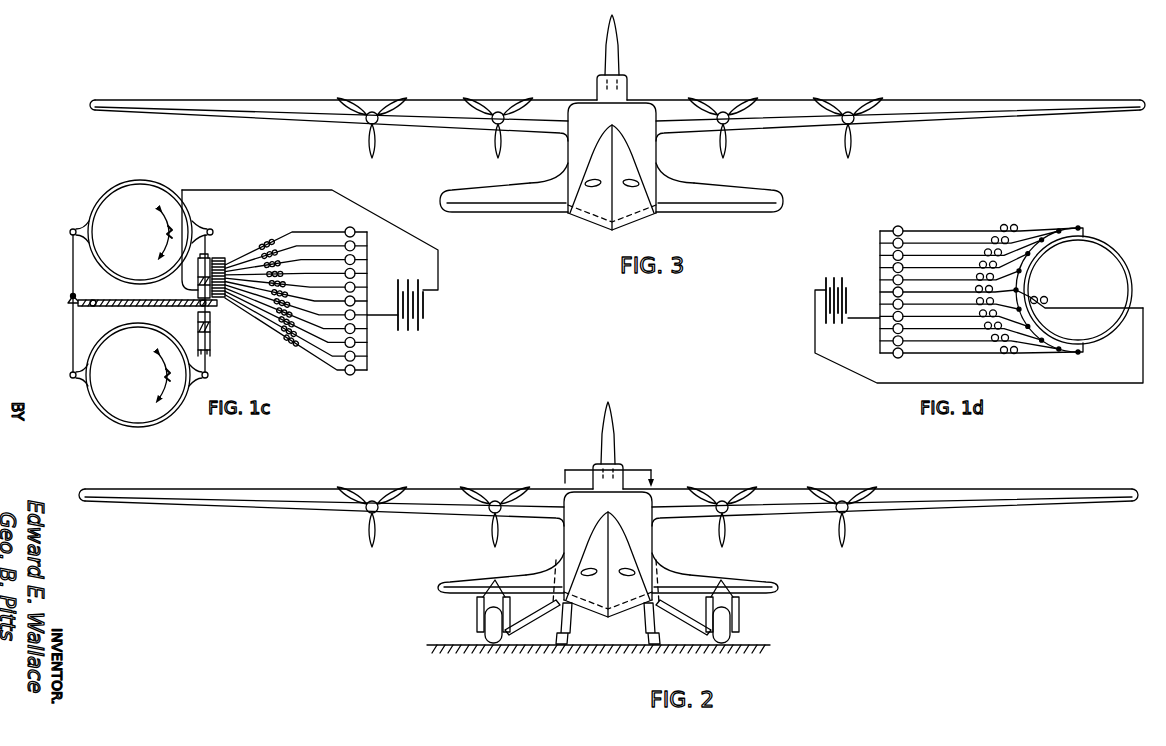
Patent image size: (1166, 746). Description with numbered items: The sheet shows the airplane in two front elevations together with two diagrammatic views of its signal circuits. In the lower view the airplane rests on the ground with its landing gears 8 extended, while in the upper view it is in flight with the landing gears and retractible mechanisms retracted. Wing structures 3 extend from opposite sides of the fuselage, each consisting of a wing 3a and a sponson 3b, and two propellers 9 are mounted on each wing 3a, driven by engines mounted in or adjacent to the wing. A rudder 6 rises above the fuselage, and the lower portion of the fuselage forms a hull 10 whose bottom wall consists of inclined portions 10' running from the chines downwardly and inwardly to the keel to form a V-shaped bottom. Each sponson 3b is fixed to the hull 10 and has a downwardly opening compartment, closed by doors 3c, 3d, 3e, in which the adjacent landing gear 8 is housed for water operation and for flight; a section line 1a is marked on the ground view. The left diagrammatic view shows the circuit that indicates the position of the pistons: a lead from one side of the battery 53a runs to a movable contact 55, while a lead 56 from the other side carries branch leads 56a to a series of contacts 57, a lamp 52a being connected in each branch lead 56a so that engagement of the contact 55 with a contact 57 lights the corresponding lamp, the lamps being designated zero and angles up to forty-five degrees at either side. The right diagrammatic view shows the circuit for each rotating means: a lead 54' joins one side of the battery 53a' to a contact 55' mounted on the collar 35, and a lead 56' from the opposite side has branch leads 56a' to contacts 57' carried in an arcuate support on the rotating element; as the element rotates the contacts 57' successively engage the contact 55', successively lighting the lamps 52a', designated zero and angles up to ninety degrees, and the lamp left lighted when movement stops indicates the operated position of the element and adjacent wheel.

In FIG. 2, the section line 1a is at (608, 472).
In FIG. 2, the wing structure 3 is at (608, 527).
In FIG. 3, the wing 3a is at (304, 123).
In FIG. 2, the wing 3a is at (467, 516).
In FIG. 3, the sponson 3b is at (494, 204).
In FIG. 2, the sponson 3b is at (740, 579).
In FIG. 2, the door 3c is at (654, 628).
In FIG. 2, the door 3d is at (736, 633).
In FIG. 2, the door 3e is at (478, 620).
In FIG. 3, the rudder 6 is at (621, 42).
In FIG. 2, the rudder 6 is at (608, 445).
In FIG. 2, the landing gear 8 is at (741, 616).
In FIG. 3, the propeller 9 is at (517, 107).
In FIG. 2, the propeller 9 is at (478, 495).
In FIG. 3, the hull 10 is at (612, 177).
In FIG. 2, the hull 10 is at (608, 566).
In FIG. 3, the inclined bottom portions 10' is at (612, 223).
In FIG. 2, the inclined bottom portions 10' is at (608, 616).
In FIG. 1C, the collar 35 is at (109, 189).
In FIG. 1D, the collar 35 is at (1080, 288).
In FIG. 1C, the signal devices 52a is at (337, 309).
In FIG. 1C, the battery 53a is at (325, 263).
In FIG. 1C, the movable contact 55 is at (155, 273).
In FIG. 1C, the lead 56 is at (382, 301).
In FIG. 1C, the branch leads 56a is at (285, 293).
In FIG. 1C, the contacts 57 is at (225, 297).
In FIG. 1D, the battery 53a' is at (830, 293).
In FIG. 1D, the lead 54' is at (979, 338).
In FIG. 1D, the contact 55' is at (1079, 295).
In FIG. 1D, the lead 56' is at (858, 294).
In FIG. 1D, the branch leads 56a' is at (991, 307).
In FIG. 1D, the contacts 57' is at (1049, 275).
In FIG. 1D, the signal devices 52a' is at (898, 307).